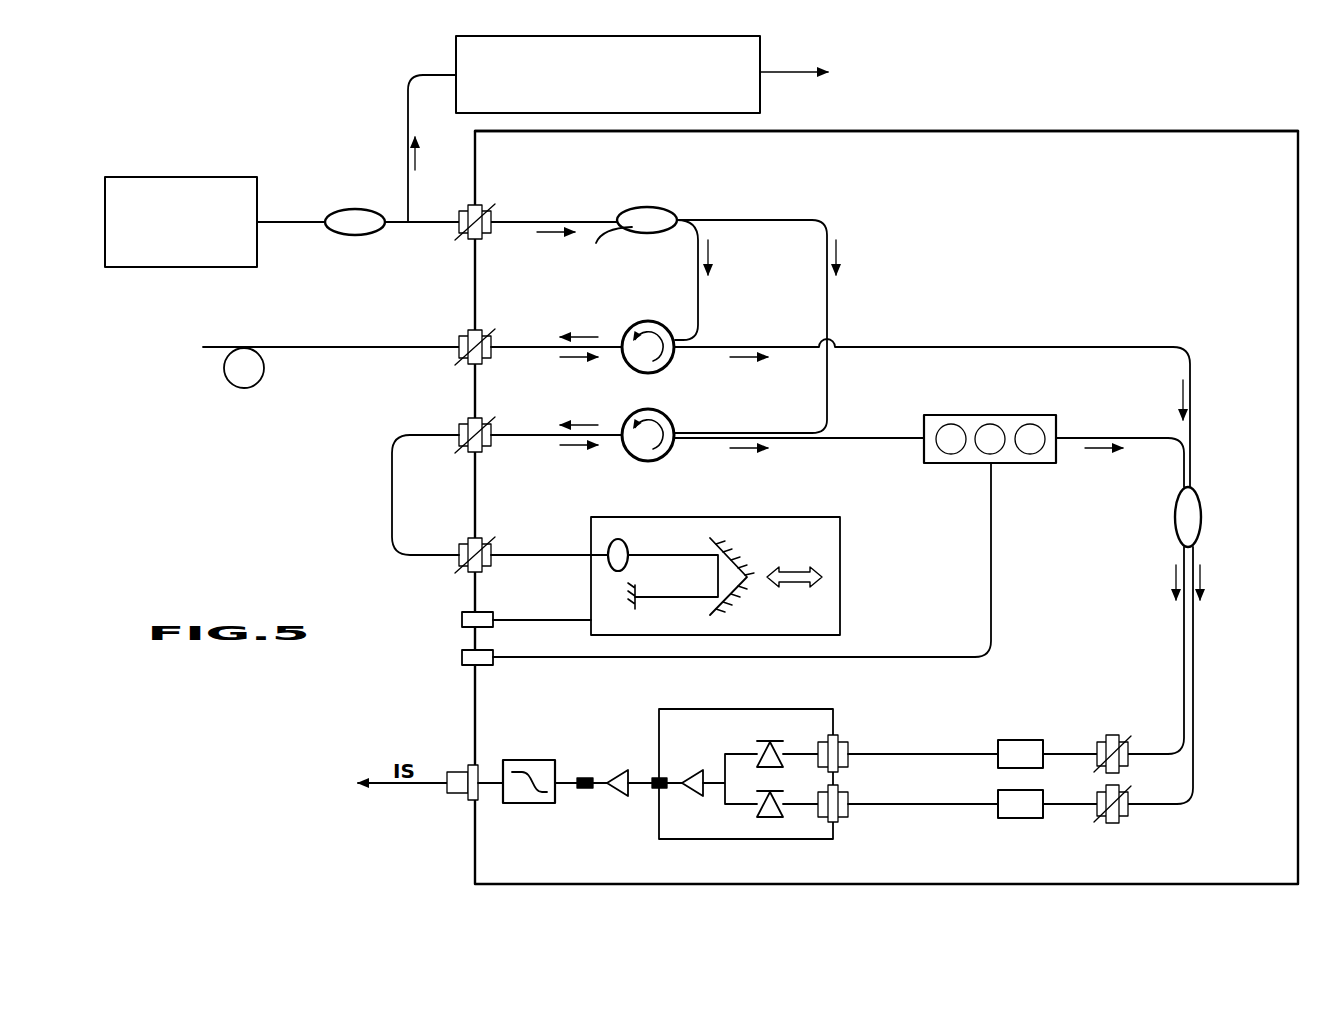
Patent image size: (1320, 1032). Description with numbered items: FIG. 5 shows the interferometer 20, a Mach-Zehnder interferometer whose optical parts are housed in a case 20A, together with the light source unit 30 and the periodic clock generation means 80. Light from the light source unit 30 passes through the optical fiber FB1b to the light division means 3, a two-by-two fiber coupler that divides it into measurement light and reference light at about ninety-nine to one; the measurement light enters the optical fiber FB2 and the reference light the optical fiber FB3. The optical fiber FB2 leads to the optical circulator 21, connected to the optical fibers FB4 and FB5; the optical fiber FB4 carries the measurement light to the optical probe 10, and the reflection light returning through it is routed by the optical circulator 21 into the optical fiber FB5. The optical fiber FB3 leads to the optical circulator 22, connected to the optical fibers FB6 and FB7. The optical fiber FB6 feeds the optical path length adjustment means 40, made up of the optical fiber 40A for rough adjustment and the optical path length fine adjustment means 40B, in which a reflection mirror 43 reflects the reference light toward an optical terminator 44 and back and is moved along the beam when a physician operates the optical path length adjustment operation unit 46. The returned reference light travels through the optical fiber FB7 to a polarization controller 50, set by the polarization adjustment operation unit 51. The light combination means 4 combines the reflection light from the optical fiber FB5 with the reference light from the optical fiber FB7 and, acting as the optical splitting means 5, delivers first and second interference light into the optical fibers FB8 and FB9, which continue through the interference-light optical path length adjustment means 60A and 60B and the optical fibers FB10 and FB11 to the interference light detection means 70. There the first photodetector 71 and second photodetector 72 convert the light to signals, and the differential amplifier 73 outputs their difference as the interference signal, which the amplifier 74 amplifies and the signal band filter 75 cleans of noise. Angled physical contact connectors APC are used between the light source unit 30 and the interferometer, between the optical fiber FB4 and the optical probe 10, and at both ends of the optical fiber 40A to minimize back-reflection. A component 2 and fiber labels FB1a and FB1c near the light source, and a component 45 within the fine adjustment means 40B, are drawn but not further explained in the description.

The optical coupler 2 is at (352, 209).
The light division means 3 is at (646, 207).
The light combination means 4 is at (1165, 543).
The optical splitting means 5 is at (1175, 514).
The optical probe 10 is at (305, 353).
The interferometer 20 is at (1256, 118).
The case 20A is at (1097, 130).
The optical circulator 21 is at (645, 322).
The optical circulator 22 is at (661, 420).
The light source unit 30 is at (180, 176).
The optical path length adjustment means 40 is at (445, 566).
The optical fiber for roughly adjusting optical path length 40A is at (391, 500).
The optical path length fine adjustment means 40B is at (757, 558).
The reflection mirror 43 is at (737, 548).
The optical terminator 44 is at (640, 600).
The lens 45 is at (618, 538).
The optical path length adjustment operation unit 46 is at (461, 620).
The polarization controller 50 is at (988, 414).
The polarization adjustment operation unit 51 is at (461, 657).
The interference-light optical path length adjustment means 60A is at (1018, 739).
The interference-light optical path length adjustment means 60B is at (1018, 819).
The interference light detection means 70 is at (781, 775).
The first photodetector 71 is at (768, 740).
The second photodetector 72 is at (782, 820).
The differential amplifier 73 is at (686, 770).
The amplifier 74 is at (612, 770).
The signal band filter 75 is at (525, 760).
The periodic clock generation means 80 is at (456, 50).
The optical fiber FB1a is at (280, 221).
The optical fiber FB1b is at (548, 221).
The optical fiber FB1c is at (408, 100).
The optical fiber FB2 is at (700, 292).
The optical fiber FB3 is at (830, 292).
The optical fiber FB4 is at (520, 346).
The optical fiber FB5 is at (1025, 346).
The optical fiber FB6 is at (520, 434).
The optical fiber FB7 is at (878, 436).
The optical fiber FB8 is at (1183, 628).
The optical fiber FB9 is at (1194, 628).
The optical fiber FB10 is at (948, 752).
The optical fiber FB11 is at (950, 806).
The APC connector APC is at (470, 242).